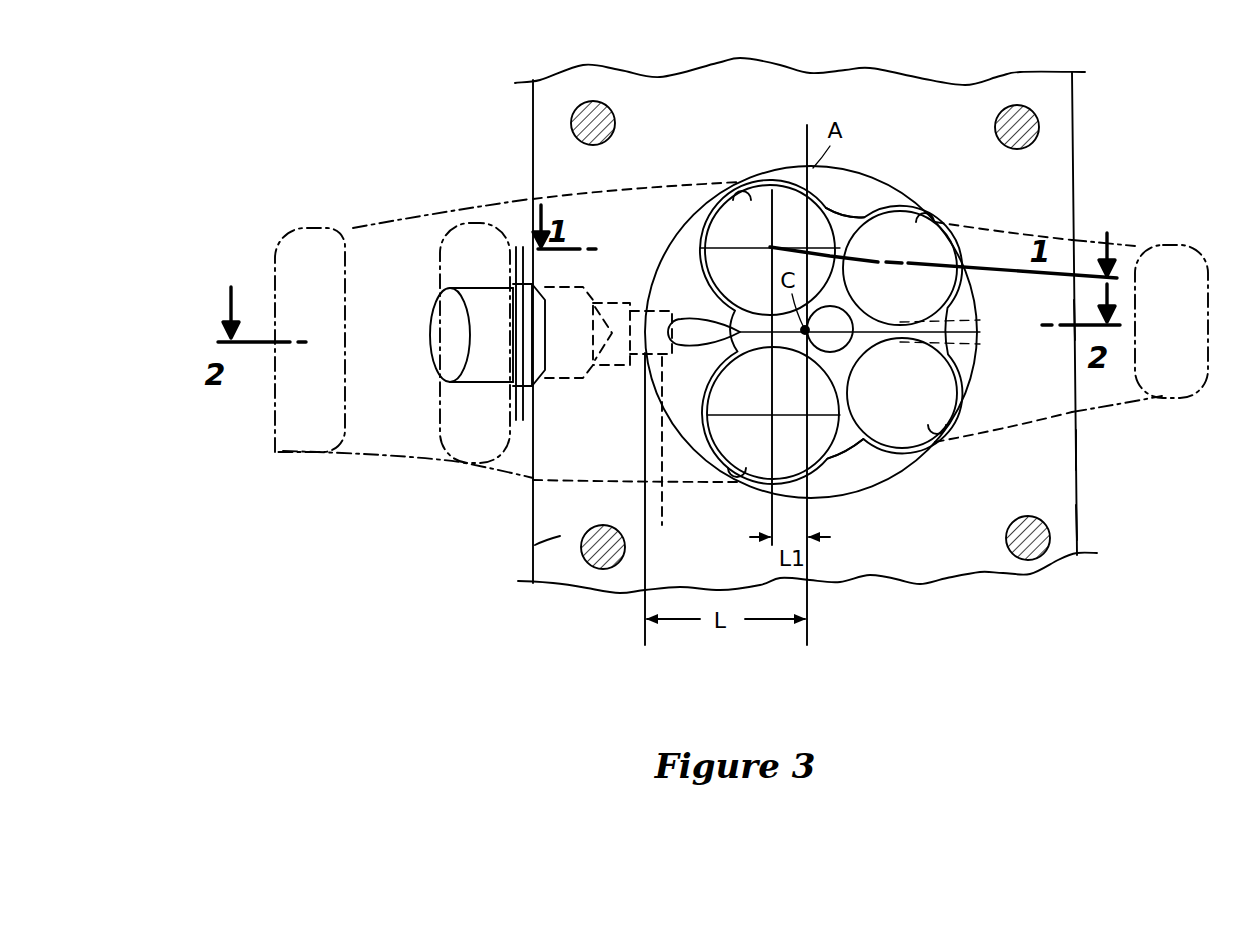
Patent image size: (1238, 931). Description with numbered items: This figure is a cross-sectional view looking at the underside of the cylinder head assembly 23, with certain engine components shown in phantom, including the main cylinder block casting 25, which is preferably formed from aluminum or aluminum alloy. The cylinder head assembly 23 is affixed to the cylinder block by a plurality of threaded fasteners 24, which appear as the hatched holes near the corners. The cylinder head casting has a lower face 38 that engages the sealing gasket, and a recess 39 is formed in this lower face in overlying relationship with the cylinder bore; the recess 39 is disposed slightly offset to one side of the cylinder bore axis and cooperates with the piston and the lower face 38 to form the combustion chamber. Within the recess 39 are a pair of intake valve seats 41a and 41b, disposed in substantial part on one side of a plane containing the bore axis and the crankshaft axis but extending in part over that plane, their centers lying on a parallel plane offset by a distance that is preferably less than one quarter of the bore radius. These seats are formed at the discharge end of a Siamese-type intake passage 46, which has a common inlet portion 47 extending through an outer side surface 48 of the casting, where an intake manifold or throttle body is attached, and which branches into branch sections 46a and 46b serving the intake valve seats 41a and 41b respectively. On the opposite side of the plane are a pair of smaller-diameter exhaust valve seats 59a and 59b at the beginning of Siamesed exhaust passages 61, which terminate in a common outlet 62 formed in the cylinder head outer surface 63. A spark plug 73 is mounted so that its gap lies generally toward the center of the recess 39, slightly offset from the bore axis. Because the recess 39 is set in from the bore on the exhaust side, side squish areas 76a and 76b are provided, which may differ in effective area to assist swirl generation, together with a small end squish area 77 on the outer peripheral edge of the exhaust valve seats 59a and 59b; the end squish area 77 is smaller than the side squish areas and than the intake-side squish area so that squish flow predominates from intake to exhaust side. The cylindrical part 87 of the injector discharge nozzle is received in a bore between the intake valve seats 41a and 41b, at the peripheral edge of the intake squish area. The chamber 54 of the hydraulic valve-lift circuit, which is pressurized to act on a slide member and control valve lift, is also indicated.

The cylinder head assembly 23 is at (1112, 96).
The threaded fasteners 24 is at (600, 106).
The cylinder block casting 25 is at (410, 320).
The lower face 38 is at (1065, 441).
The recess 39 is at (860, 447).
The intake valve seat 41a is at (754, 186).
The intake valve seat 41b is at (733, 463).
The intake passage 46 is at (445, 463).
The branch section 46a is at (576, 198).
The branch section 46b is at (598, 482).
The common inlet portion 47 is at (286, 440).
The outer side surface 48 is at (530, 540).
The chamber 54 is at (520, 265).
The exhaust valve seat 59a is at (936, 226).
The exhaust valve seat 59b is at (946, 427).
The exhaust passages 61 is at (1132, 243).
The common outlet 62 is at (1096, 242).
The cylinder head outer surface 63 is at (1077, 527).
The spark plug 73 is at (840, 318).
The side squish area 76a is at (852, 185).
The side squish area 76b is at (850, 478).
The end squish area 77 is at (968, 343).
The cylindrical part 87 is at (673, 461).